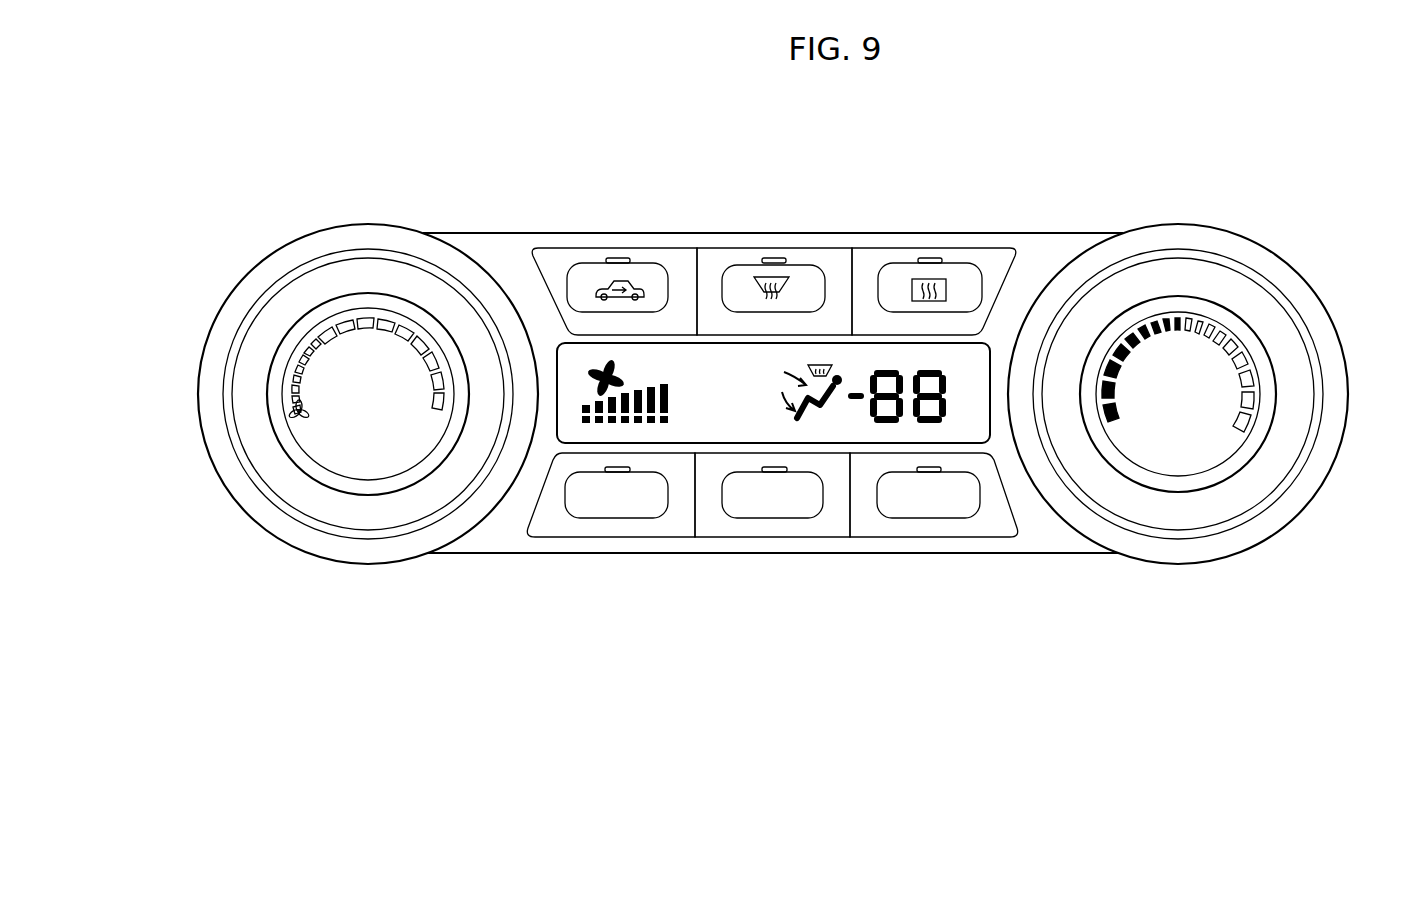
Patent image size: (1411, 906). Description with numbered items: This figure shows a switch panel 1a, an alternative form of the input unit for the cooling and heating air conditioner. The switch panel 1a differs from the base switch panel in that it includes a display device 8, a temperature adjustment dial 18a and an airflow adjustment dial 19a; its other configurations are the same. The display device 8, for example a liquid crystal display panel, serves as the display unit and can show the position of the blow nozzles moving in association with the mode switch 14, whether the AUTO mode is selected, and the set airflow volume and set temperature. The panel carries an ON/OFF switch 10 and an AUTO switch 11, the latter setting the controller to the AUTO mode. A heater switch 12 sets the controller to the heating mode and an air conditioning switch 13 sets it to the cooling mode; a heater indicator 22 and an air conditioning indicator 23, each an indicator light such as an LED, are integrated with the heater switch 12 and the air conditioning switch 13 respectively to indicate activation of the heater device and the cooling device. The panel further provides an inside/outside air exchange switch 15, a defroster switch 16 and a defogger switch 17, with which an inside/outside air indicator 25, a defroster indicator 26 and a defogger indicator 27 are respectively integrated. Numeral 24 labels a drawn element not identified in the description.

The switch panel 1a is at (1068, 233).
The display device 8 is at (843, 355).
The ON/OFF switch 10 is at (362, 455).
The AUTO switch 11 is at (1190, 453).
The heater switch 12 is at (555, 523).
The air conditioning switch 13 is at (870, 523).
The mode switch 14 is at (713, 523).
The inside/outside air exchange switch 15 is at (560, 268).
The defroster switch 16 is at (718, 268).
The defogger switch 17 is at (873, 268).
The temperature adjustment dial 18a is at (1280, 385).
The airflow adjustment dial 19a is at (262, 383).
The heater indicator 22 is at (630, 468).
The air conditioning indicator 23 is at (940, 468).
The mode switch button 24 is at (787, 468).
The inside/outside air indicator 25 is at (618, 258).
The defroster indicator 26 is at (774, 258).
The defogger indicator 27 is at (930, 258).